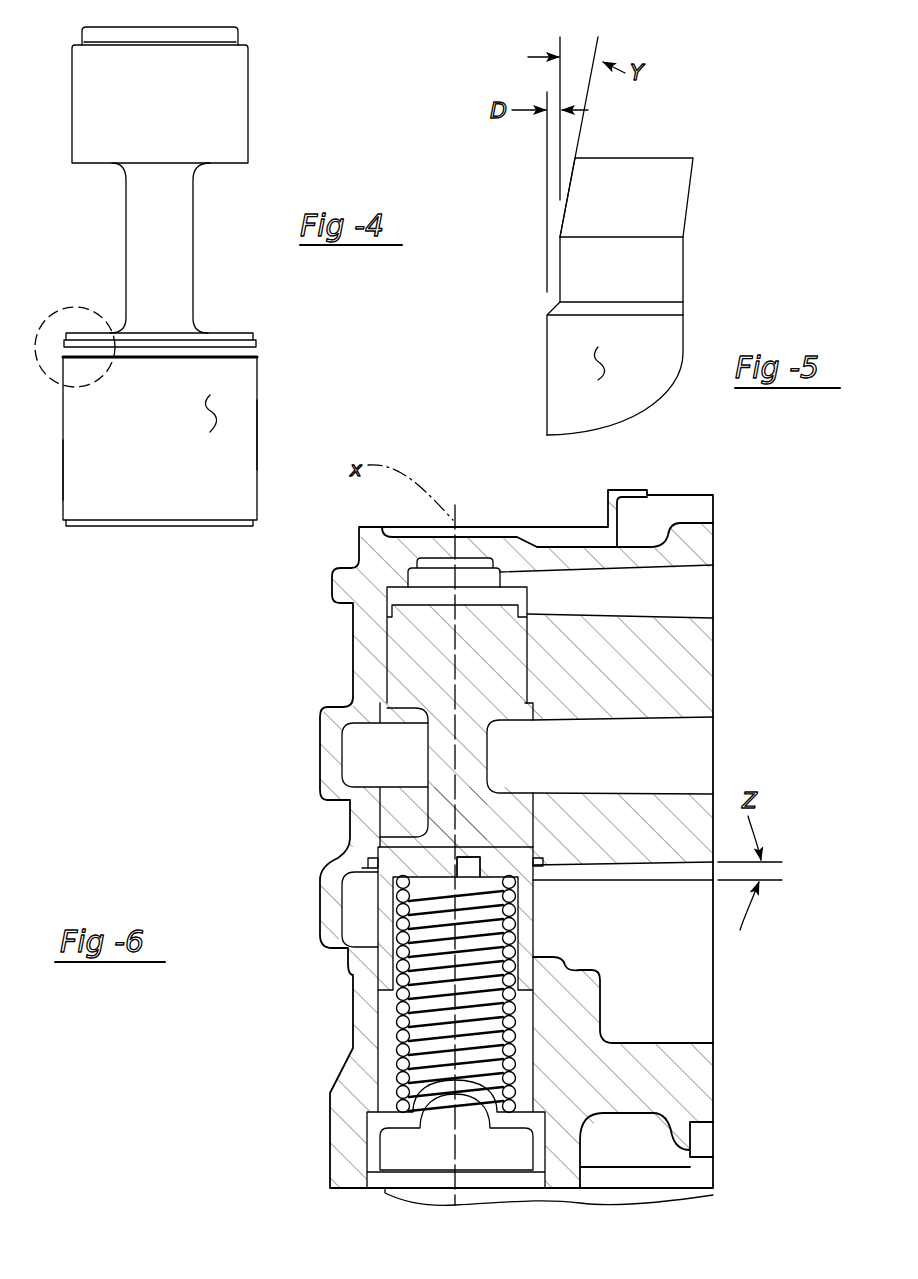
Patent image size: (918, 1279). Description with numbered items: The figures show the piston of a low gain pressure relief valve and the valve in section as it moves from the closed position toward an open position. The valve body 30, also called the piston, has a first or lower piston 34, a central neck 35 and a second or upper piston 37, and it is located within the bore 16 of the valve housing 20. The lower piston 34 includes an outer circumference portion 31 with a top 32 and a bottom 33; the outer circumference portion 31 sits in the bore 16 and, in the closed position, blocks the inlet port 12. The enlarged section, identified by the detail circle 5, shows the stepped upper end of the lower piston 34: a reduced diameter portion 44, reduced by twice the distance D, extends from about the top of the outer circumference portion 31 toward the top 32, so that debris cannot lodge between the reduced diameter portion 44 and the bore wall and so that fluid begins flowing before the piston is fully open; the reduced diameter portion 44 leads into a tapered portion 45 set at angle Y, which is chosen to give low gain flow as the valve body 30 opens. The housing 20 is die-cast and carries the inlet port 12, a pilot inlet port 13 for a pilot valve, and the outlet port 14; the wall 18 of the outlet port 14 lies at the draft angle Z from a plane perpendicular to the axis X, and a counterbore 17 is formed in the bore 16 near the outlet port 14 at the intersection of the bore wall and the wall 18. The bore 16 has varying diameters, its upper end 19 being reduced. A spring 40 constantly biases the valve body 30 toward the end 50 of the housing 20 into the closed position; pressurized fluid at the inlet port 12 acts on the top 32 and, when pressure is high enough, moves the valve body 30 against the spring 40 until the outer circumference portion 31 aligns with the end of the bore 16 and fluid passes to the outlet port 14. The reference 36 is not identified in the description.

In FIG. 4, the detail circle of Fig. 5 is at (67, 305).
In FIG. 6, the inlet port 12 is at (698, 738).
In FIG. 6, the pilot inlet port 13 is at (700, 585).
In FIG. 6, the outlet port 14 is at (698, 992).
In FIG. 6, the bore 16 is at (533, 815).
In FIG. 6, the counterbore 17 is at (366, 860).
In FIG. 6, the first wall of the outlet 18 is at (668, 867).
In FIG. 6, the upper end of the bore 19 is at (525, 657).
In FIG. 6, the valve housing 20 is at (327, 1186).
In FIG. 4, the valve body 30 is at (163, 303).
In FIG. 5, the valve body 30 is at (616, 264).
In FIG. 4, the outer circumference portion 31 is at (208, 416).
In FIG. 5, the outer circumference portion 31 is at (600, 363).
In FIG. 6, the outer circumference portion 31 is at (535, 900).
In FIG. 4, the top 32 is at (249, 332).
In FIG. 5, the top 32 is at (636, 158).
In FIG. 4, the bottom 33 is at (98, 528).
In FIG. 4, the lower piston 34 is at (65, 469).
In FIG. 5, the lower piston 34 is at (654, 411).
In FIG. 6, the lower piston 34 is at (363, 928).
In FIG. 4, the central neck 35 is at (125, 236).
In FIG. 6, the central neck 35 is at (423, 768).
In FIG. 4, the outer wall 36 is at (257, 435).
In FIG. 5, the outer wall 36 is at (547, 375).
In FIG. 4, the upper piston 37 is at (251, 92).
In FIG. 6, the spring 40 is at (393, 1035).
In FIG. 5, the reduced diameter portion 44 is at (668, 272).
In FIG. 5, the tapered portion 45 is at (665, 220).
In FIG. 6, the end of the housing 50 is at (400, 588).